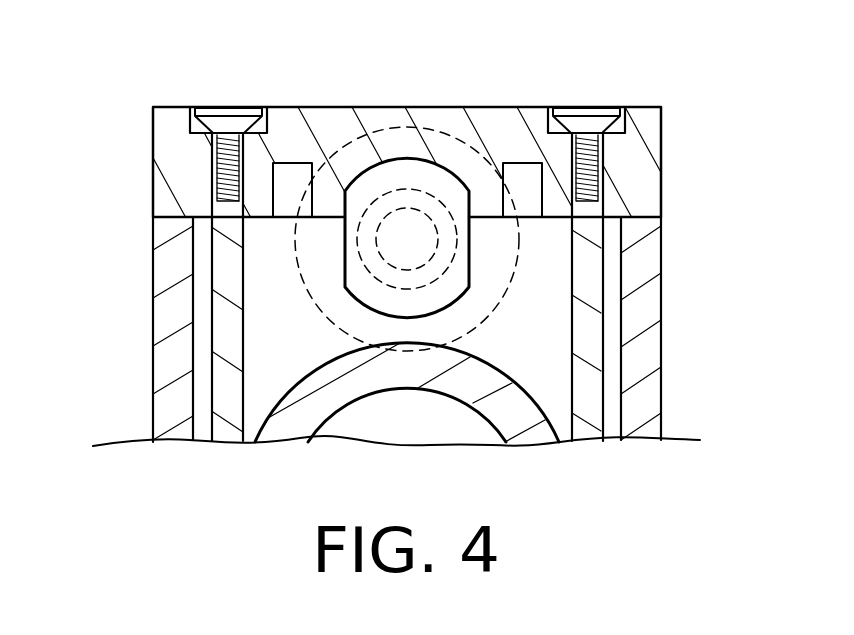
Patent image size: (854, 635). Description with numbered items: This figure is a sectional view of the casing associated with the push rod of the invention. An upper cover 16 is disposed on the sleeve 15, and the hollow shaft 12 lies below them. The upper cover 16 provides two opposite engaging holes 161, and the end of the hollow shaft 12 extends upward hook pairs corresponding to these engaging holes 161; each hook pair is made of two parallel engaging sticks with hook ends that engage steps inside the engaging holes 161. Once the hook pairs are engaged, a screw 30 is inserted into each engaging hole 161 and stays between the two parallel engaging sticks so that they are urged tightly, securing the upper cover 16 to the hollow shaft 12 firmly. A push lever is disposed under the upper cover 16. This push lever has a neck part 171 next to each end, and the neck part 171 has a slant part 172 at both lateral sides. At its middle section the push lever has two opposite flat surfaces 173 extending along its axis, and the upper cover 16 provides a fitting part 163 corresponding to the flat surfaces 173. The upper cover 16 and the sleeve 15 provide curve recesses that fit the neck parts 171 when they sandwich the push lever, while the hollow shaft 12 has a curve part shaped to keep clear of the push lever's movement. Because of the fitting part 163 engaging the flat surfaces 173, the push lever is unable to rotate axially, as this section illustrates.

The hollow shaft 12 is at (593, 277).
The sleeve 15 is at (660, 353).
The upper cover 16 is at (642, 112).
The engaging hole 161 is at (197, 125).
The fitting part 163 is at (385, 163).
The neck part 171 is at (405, 215).
The slant part 172 is at (430, 197).
The flat surface 173 is at (468, 253).
The screw 30 is at (223, 120).